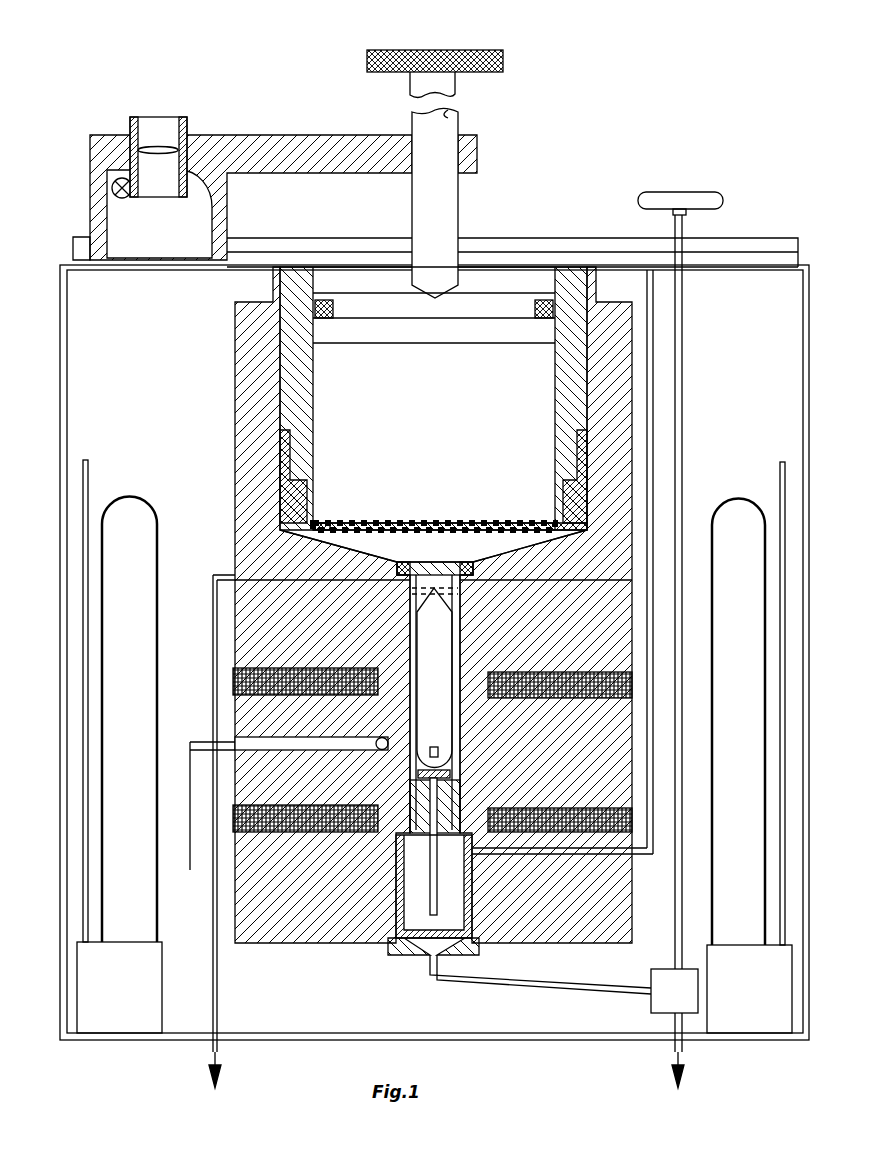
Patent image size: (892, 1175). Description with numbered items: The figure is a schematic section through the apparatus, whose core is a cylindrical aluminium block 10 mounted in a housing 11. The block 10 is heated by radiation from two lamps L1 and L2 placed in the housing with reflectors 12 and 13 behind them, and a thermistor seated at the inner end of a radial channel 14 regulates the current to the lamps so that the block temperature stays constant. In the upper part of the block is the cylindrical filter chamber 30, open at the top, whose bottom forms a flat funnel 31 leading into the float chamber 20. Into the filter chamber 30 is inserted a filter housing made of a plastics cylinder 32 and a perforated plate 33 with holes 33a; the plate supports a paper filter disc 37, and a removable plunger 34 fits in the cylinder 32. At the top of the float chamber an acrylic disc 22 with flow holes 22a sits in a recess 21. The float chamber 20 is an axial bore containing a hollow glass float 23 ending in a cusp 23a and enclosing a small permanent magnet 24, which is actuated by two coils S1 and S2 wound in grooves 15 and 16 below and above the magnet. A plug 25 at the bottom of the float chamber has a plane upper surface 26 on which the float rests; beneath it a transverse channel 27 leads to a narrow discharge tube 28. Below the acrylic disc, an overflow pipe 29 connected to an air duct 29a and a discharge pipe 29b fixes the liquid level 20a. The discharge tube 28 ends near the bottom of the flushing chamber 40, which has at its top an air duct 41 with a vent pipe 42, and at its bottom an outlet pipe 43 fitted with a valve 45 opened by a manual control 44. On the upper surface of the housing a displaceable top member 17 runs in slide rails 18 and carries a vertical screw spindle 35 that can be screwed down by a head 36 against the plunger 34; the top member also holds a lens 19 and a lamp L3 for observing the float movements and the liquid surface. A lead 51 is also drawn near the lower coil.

The cylindrical aluminium block 10 is at (235, 400).
The housing 11 is at (70, 312).
The reflector 12 is at (88, 482).
The reflector 13 is at (782, 470).
The radial channel 14 is at (235, 742).
The groove 15 is at (545, 808).
The groove 16 is at (548, 672).
The displaceable top member 17 is at (302, 150).
The slide rails 18 is at (540, 248).
The lens 19 is at (158, 146).
The float chamber 20 is at (463, 638).
The liquid level 20a is at (466, 578).
The recess 21 is at (412, 560).
The acrylic disc 22 is at (426, 563).
The flow holes 22a is at (464, 563).
The hollow glass float 23 is at (434, 678).
The cusp 23a is at (440, 612).
The permanent magnet 24 is at (433, 747).
The plug 25 is at (428, 856).
The plane upper surface 26 is at (463, 760).
The transverse channel 27 is at (418, 774).
The discharge tube 28 is at (437, 870).
The overflow pipe 29 is at (390, 585).
The air duct 29a is at (258, 502).
The discharge pipe 29b is at (213, 656).
The filter chamber 30 is at (560, 392).
The flat funnel 31 is at (348, 536).
The cylinder 32 is at (306, 420).
The perforated plate 33 is at (548, 526).
The holes 33a is at (386, 526).
The removable plunger 34 is at (452, 336).
The vertical screw spindle 35 is at (450, 222).
The head 36 is at (450, 52).
The paper filter disc 37 is at (324, 523).
The flushing chamber 40 is at (412, 950).
The air duct 41 is at (610, 856).
The vent pipe 42 is at (684, 465).
The outlet pipe 43 is at (522, 988).
The manual control 44 is at (690, 200).
The valve 45 is at (656, 998).
The heater lead 51 is at (355, 832).
The lamp L1 is at (119, 764).
The lamp L2 is at (749, 766).
The lamp L3 is at (127, 198).
The coil S1 is at (632, 820).
The coil S2 is at (632, 685).